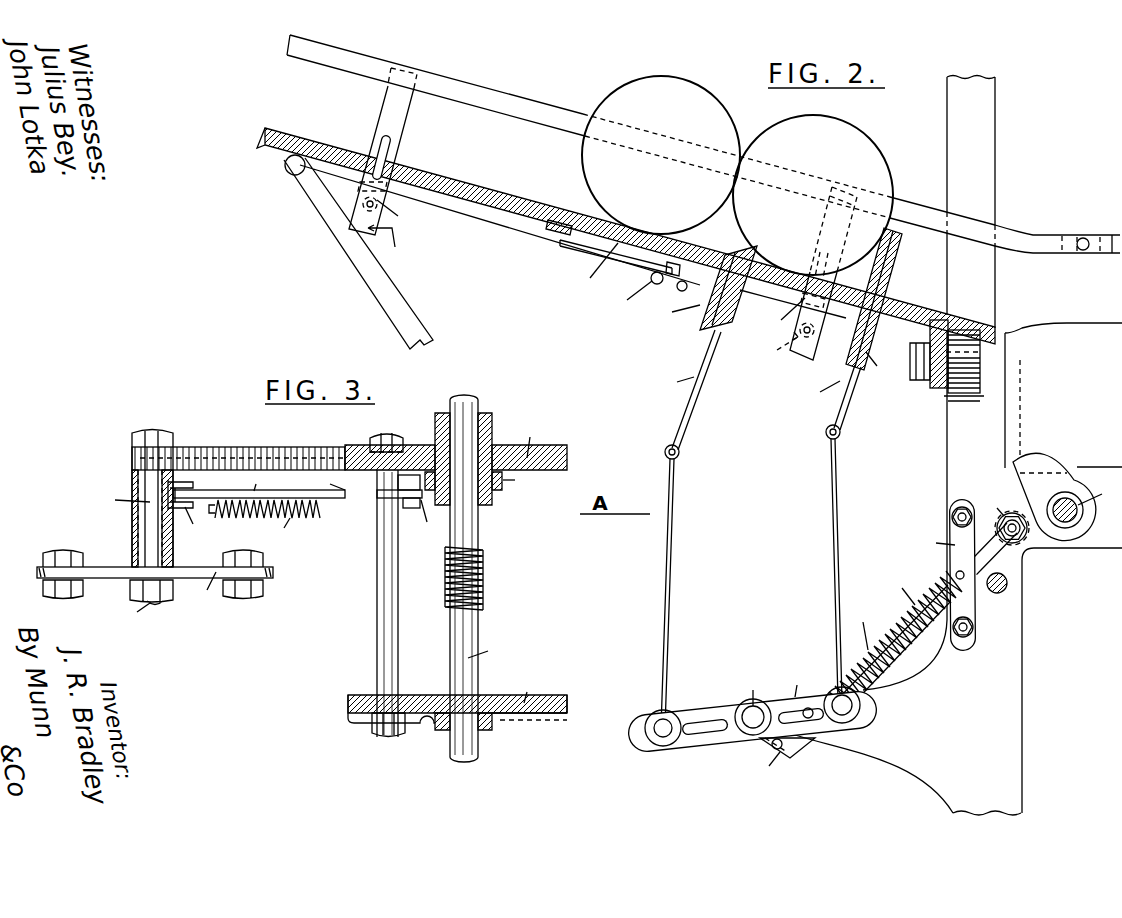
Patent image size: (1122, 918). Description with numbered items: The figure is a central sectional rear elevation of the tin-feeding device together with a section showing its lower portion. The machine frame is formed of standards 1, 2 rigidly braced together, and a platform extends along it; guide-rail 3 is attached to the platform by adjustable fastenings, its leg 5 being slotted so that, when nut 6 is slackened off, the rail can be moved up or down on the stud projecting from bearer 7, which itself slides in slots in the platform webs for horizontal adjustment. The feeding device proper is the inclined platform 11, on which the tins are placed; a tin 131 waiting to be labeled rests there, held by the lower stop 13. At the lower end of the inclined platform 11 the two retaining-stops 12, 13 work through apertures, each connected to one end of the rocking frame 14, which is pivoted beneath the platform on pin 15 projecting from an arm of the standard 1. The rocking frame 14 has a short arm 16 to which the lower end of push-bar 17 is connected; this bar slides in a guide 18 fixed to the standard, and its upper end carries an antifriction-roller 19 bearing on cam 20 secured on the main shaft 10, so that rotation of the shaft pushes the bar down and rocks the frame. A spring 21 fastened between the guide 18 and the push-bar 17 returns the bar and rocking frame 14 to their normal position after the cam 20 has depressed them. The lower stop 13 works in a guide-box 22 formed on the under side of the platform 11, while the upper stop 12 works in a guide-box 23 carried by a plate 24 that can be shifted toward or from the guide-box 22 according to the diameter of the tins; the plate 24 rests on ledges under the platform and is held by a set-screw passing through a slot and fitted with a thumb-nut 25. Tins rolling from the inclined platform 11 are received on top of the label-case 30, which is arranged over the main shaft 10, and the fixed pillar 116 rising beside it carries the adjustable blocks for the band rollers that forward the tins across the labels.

In FIG. 2, the standard 1 is at (958, 567).
In FIG. 3, the standard 1 is at (456, 459).
In FIG. 3, the standard 2 is at (457, 701).
In FIG. 2, the guide-rail 3 is at (703, 144).
In FIG. 2, the leg 5 is at (603, 214).
In FIG. 2, the nut 6 is at (588, 280).
In FIG. 2, the bearer 7 is at (591, 260).
In FIG. 2, the main shaft 10 is at (1087, 500).
In FIG. 3, the main shaft 10 is at (477, 578).
In FIG. 2, the inclined platform 11 is at (626, 238).
In FIG. 2, the upper retaining-stop 12 is at (688, 529).
In FIG. 2, the lower retaining-stop 13 is at (829, 532).
In FIG. 2, the rocking frame 14 is at (752, 705).
In FIG. 3, the rocking frame 14 is at (191, 528).
In FIG. 2, the pin 15 is at (753, 702).
In FIG. 3, the pin 15 is at (153, 530).
In FIG. 2, the short arm 16 is at (783, 762).
In FIG. 3, the short arm 16 is at (188, 511).
In FIG. 2, the push-bar 17 is at (927, 616).
In FIG. 3, the push-bar 17 is at (259, 484).
In FIG. 2, the guide 18 is at (942, 572).
In FIG. 3, the guide 18 is at (357, 462).
In FIG. 2, the antifriction-roller 19 is at (1005, 516).
In FIG. 3, the antifriction-roller 19 is at (405, 603).
In FIG. 2, the cam 20 is at (1054, 496).
In FIG. 3, the cam 20 is at (481, 480).
In FIG. 2, the spring 21 is at (896, 642).
In FIG. 3, the spring 21 is at (264, 521).
In FIG. 2, the guide-box 22 is at (874, 306).
In FIG. 2, the guide-box 23 is at (701, 288).
In FIG. 2, the plate 24 is at (609, 258).
In FIG. 2, the thumb-nut 25 is at (644, 289).
In FIG. 2, the label-case 30 is at (1063, 398).
In FIG. 2, the fixed pillar 116 is at (971, 202).
In FIG. 2, the tin 131 is at (737, 175).